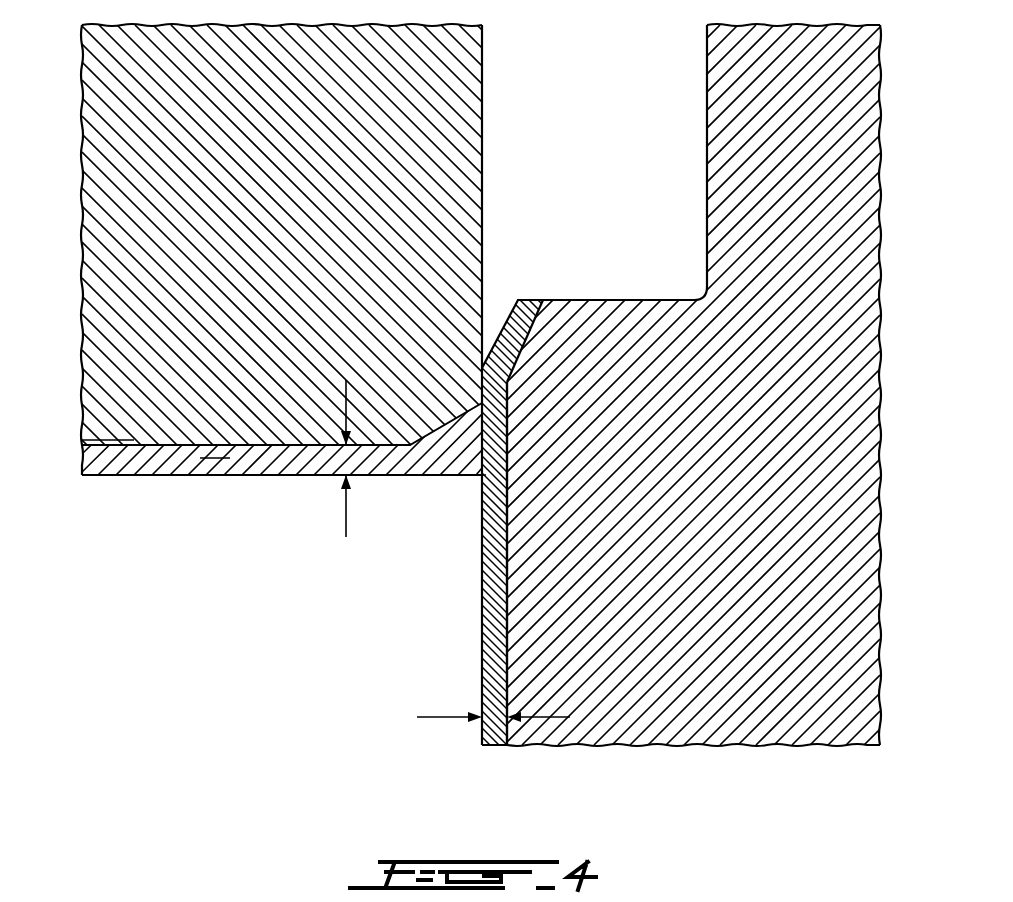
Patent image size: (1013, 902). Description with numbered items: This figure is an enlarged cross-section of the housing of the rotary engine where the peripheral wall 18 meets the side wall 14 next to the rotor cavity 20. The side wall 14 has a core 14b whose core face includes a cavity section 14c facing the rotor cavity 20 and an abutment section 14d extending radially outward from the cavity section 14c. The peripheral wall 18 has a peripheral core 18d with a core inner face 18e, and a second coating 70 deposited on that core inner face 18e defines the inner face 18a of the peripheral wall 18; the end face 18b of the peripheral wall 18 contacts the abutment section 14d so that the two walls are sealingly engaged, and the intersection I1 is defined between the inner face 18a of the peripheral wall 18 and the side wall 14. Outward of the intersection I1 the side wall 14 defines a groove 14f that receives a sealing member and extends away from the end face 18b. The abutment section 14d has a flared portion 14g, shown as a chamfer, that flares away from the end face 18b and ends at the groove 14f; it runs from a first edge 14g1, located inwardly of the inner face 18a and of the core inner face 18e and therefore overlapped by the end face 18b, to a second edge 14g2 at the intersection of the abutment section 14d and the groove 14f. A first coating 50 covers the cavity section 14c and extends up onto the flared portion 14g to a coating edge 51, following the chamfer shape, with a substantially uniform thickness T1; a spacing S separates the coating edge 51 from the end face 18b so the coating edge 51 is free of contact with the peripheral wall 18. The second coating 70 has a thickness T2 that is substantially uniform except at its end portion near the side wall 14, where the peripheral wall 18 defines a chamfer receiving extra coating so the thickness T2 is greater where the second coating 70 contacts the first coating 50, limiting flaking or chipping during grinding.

The side wall 14 is at (800, 558).
The core 14b is at (824, 667).
The cavity section 14c is at (482, 557).
The abutment section 14d is at (507, 472).
The groove 14f is at (707, 130).
The flared portion 14g is at (530, 342).
The first edge 14g1 is at (507, 383).
The second edge 14g2 is at (543, 302).
The peripheral wall 18 is at (130, 296).
The inner face 18a is at (263, 475).
The end face 18b is at (482, 78).
The peripheral core 18d is at (142, 100).
The core inner face 18e is at (133, 443).
The rotor cavity 20 is at (262, 665).
The first coating 50 is at (482, 633).
The coating edge 51 is at (518, 300).
The second coating 70 is at (213, 458).
The spacing S is at (494, 295).
The thickness of first coating T1 is at (548, 717).
The thickness of second coating T2 is at (348, 514).
The intersection I1 is at (482, 475).